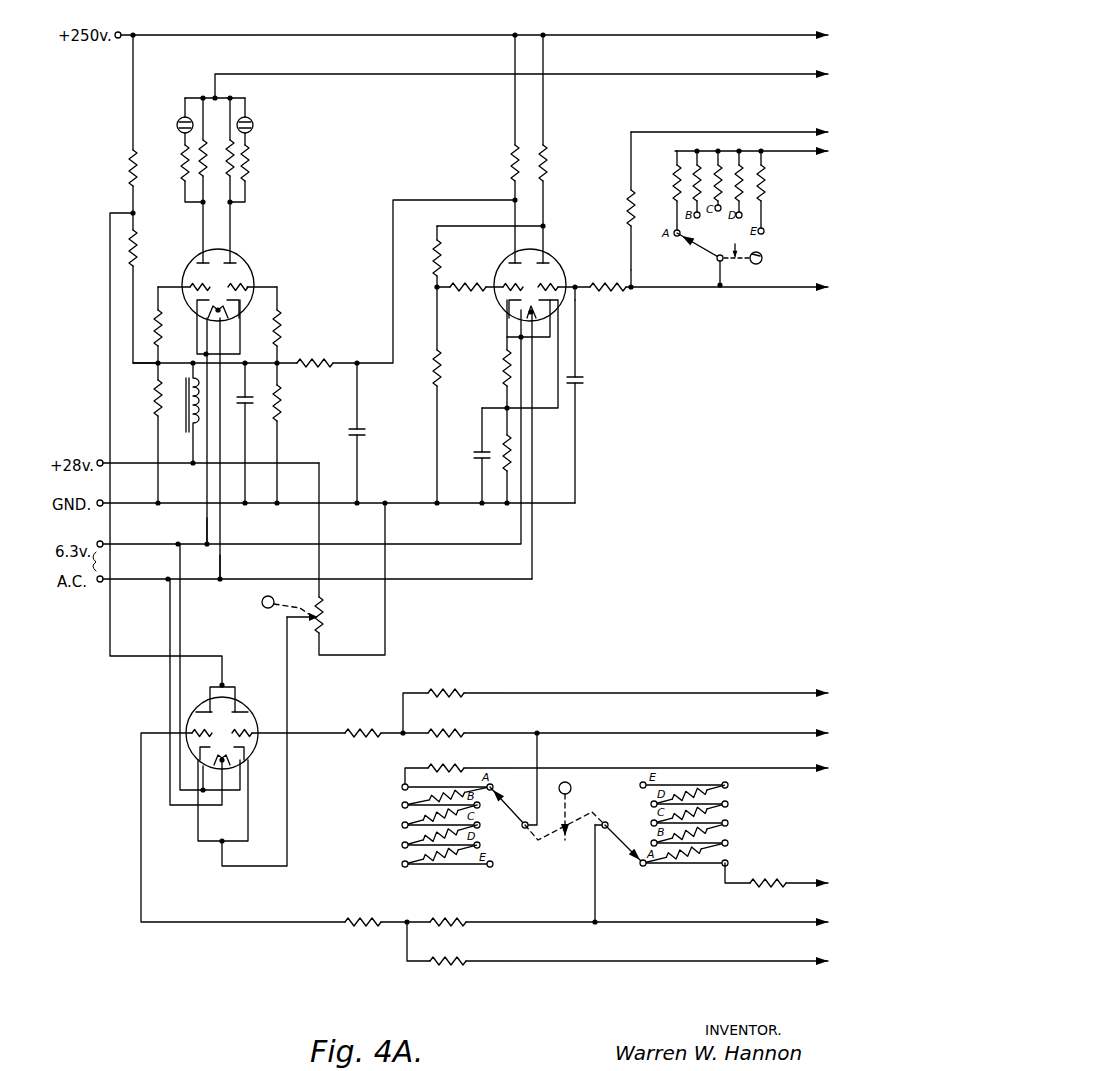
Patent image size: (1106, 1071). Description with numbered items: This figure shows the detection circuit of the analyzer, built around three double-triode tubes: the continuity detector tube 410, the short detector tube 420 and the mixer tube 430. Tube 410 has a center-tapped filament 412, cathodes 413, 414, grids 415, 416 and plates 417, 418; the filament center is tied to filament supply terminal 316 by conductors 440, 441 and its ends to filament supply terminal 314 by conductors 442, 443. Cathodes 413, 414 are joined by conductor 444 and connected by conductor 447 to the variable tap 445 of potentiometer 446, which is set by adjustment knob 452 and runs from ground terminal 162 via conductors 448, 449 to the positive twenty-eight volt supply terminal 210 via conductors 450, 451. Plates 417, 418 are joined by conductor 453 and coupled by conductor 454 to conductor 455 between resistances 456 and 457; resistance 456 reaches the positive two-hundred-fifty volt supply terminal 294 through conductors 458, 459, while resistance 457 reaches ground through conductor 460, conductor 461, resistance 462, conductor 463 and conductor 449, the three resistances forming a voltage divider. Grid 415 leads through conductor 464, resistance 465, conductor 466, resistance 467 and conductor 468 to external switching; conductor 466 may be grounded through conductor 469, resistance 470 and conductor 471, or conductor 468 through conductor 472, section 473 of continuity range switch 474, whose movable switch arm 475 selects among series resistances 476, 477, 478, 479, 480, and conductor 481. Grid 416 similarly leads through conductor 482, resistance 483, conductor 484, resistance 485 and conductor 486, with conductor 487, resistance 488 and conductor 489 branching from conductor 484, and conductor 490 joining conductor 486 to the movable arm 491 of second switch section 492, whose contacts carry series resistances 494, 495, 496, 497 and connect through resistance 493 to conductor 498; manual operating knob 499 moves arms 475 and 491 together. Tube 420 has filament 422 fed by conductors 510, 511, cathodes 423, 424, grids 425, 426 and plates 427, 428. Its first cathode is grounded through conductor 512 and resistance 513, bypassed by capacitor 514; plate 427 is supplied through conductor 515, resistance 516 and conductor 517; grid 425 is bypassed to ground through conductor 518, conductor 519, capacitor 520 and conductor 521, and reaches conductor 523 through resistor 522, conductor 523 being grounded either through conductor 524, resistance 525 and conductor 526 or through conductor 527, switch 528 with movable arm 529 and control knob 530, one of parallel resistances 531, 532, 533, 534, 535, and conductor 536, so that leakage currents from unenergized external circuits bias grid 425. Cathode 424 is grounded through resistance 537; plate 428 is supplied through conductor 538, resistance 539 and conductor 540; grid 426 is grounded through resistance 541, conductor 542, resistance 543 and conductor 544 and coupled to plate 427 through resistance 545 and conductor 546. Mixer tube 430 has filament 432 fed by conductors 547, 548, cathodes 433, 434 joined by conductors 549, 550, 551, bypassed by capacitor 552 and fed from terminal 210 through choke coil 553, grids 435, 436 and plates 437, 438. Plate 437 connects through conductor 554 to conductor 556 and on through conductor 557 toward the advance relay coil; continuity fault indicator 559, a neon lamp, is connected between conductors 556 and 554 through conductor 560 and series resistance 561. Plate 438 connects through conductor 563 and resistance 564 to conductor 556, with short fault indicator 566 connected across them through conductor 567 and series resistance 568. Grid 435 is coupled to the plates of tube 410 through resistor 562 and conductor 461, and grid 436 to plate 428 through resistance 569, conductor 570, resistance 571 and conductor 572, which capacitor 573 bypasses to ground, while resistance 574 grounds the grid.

The positive 250 volt supply terminal 294 is at (118, 32).
The conductor 459 is at (185, 34).
The conductor 557 is at (252, 73).
The conductor 556 is at (214, 95).
The conductor 560 is at (182, 113).
The continuity fault indicator 559 is at (177, 125).
The conductor 567 is at (250, 110).
The short fault indicator 566 is at (253, 125).
The series resistance 561 is at (184, 161).
The choke coil 553 is at (204, 176).
The conductor 554 is at (203, 222).
The resistance 564 is at (230, 145).
The conductor 563 is at (233, 224).
The series resistance 568 is at (249, 168).
The conductor 458 is at (133, 108).
The resistance 456 is at (131, 173).
The conductor 455 is at (131, 203).
The conductor 454 is at (110, 276).
The resistance 457 is at (134, 252).
The mixer tube 430 is at (248, 269).
The plate 437 is at (200, 270).
The plate 438 is at (233, 267).
The grid 435 is at (195, 285).
The grid 436 is at (252, 287).
The conductor 460 is at (172, 287).
The cathode 434 is at (258, 300).
The center-tapped filament 432 is at (226, 322).
The cathode 433 is at (160, 322).
The resistor 562 is at (160, 338).
The conductor 461 is at (156, 374).
The conductor 549 is at (160, 366).
The resistance 462 is at (156, 398).
The conductor 463 is at (156, 422).
The capacitor 552 is at (247, 417).
The resistance 569 is at (280, 322).
The conductor 570 is at (280, 350).
The resistance 574 is at (280, 402).
The conductor 551 is at (279, 364).
The resistance 571 is at (316, 361).
The conductor 572 is at (392, 327).
The capacitor 573 is at (360, 429).
The conductor 550 is at (228, 448).
The positive 28 volt supply terminal 210 is at (100, 459).
The conductor 451 is at (133, 461).
The ground terminal 162 is at (100, 499).
The conductor 449 is at (128, 502).
The filament supply terminal 314 is at (100, 541).
The conductor 443 is at (255, 542).
The conductor 548 is at (206, 542).
The conductor 450 is at (320, 527).
The filament supply terminal 316 is at (100, 583).
The conductor 441 is at (268, 578).
The conductor 547 is at (218, 577).
The adjustment knob 452 is at (267, 609).
The potentiometer 446 is at (323, 616).
The variable tap 445 is at (300, 628).
The conductor 448 is at (387, 617).
The conductor 453 is at (226, 688).
The continuity detector tube 410 is at (240, 698).
The plate 417 is at (205, 712).
The plate 418 is at (247, 715).
The grid 415 is at (190, 733).
The grid 416 is at (250, 730).
The cathode 414 is at (250, 744).
The cathode 413 is at (196, 748).
The center-tapped filament 412 is at (232, 770).
The conductor 442 is at (179, 790).
The conductor 440 is at (182, 811).
The conductor 444 is at (246, 825).
The conductor 447 is at (258, 868).
The conductor 464 is at (141, 850).
The conductor 482 is at (314, 732).
The resistance 483 is at (359, 740).
The conductor 487 is at (402, 698).
The resistance 488 is at (458, 692).
The conductor 489 is at (760, 693).
The conductor 484 is at (422, 732).
The resistance 485 is at (462, 726).
The conductor 486 is at (760, 732).
The conductor 490 is at (539, 752).
The resistance 493 is at (452, 767).
The conductor 498 is at (760, 767).
The series connected resistance 494 is at (403, 804).
The series connected resistance 495 is at (403, 825).
The series connected resistance 496 is at (403, 845).
The series connected resistance 497 is at (403, 864).
The movable arm 491 is at (515, 812).
The second section of continuity range switch 492 is at (522, 826).
The manual operating knob 499 is at (571, 789).
The continuity range switch 474 is at (559, 845).
The section of continuity range switch 473 is at (609, 826).
The conductor 472 is at (596, 890).
The movable switch arm 475 is at (621, 845).
The series connected resistance 477 is at (690, 872).
The series connected resistance 478 is at (712, 840).
The series connected resistance 479 is at (712, 820).
The series connected resistance 480 is at (712, 800).
The series connected resistance 476 is at (768, 882).
The conductor 481 is at (791, 886).
The conductor 468 is at (657, 925).
The resistance 465 is at (355, 929).
The conductor 466 is at (401, 920).
The resistance 467 is at (452, 928).
The conductor 469 is at (406, 951).
The resistance 470 is at (452, 967).
The conductor 471 is at (655, 964).
The conductor 540 is at (514, 102).
The resistance 539 is at (514, 163).
The conductor 538 is at (515, 214).
The conductor 517 is at (545, 100).
The resistance 516 is at (546, 160).
The conductor 515 is at (545, 200).
The conductor 546 is at (448, 226).
The resistance 545 is at (436, 270).
The short detector tube 420 is at (561, 259).
The plate 428 is at (512, 262).
The plate 427 is at (545, 246).
The grid 426 is at (508, 283).
The grid 425 is at (561, 281).
The resistance 541 is at (478, 287).
The cathode 424 is at (505, 301).
The center-tapped filament 422 is at (510, 322).
The conductor 542 is at (436, 300).
The resistance 543 is at (436, 368).
The conductor 544 is at (436, 431).
The resistance 537 is at (505, 368).
The conductor 512 is at (560, 360).
The resistance 513 is at (481, 440).
The by-pass capacitor 514 is at (478, 466).
The conductor 511 is at (511, 440).
The conductor 510 is at (534, 467).
The cathode 423 is at (577, 300).
The conductor 519 is at (578, 345).
The capacitor 520 is at (583, 380).
The conductor 521 is at (577, 447).
The conductor 518 is at (590, 285).
The resistor 522 is at (633, 290).
The conductor 523 is at (768, 288).
The conductor 524 is at (632, 268).
The resistance 525 is at (630, 211).
The conductor 526 is at (785, 131).
The conductor 536 is at (790, 152).
The parallel resistance 531 is at (676, 184).
The parallel resistance 532 is at (697, 162).
The parallel resistance 533 is at (718, 164).
The parallel resistance 534 is at (740, 164).
The parallel resistance 535 is at (765, 188).
The movable arm 529 is at (710, 254).
The conductor 527 is at (722, 273).
The control knob 530 is at (763, 258).
The switch 528 is at (731, 244).